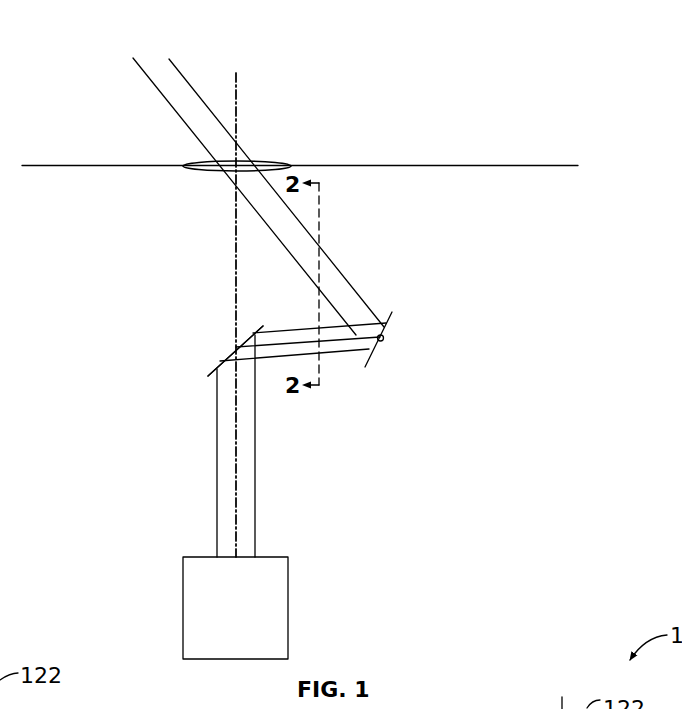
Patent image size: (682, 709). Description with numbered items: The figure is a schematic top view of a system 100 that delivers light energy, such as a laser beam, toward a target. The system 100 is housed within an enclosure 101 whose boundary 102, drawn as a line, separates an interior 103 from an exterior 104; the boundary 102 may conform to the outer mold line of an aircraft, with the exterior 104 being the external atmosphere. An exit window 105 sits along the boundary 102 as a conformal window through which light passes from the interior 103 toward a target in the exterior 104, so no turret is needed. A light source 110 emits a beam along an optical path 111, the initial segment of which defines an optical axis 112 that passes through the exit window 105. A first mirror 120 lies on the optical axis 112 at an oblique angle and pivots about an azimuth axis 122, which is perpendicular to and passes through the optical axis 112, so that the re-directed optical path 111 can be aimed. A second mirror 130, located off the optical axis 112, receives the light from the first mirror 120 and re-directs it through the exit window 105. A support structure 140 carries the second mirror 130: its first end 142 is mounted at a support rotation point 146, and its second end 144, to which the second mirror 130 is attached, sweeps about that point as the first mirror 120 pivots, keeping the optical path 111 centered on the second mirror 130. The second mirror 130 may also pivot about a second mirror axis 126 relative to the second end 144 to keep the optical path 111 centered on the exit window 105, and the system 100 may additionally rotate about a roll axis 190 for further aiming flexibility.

The system 100 is at (532, 43).
The enclosure 101 is at (552, 143).
The boundary 102 is at (568, 165).
The interior 103 is at (550, 218).
The exterior 104 is at (505, 110).
The exit window 105 is at (265, 161).
The light source 110 is at (288, 605).
The optical path 111 is at (330, 257).
The optical axis 112 is at (236, 95).
The roll axis 190 is at (236, 538).
The first mirror 120 is at (230, 357).
The azimuth axis 122 is at (236, 347).
The second mirror axis 126 is at (383, 340).
The second mirror 130 is at (388, 323).
The support structure 140 is at (332, 350).
The first end 142 is at (203, 390).
The second end 144 is at (380, 375).
The support rotation point 146 is at (228, 337).